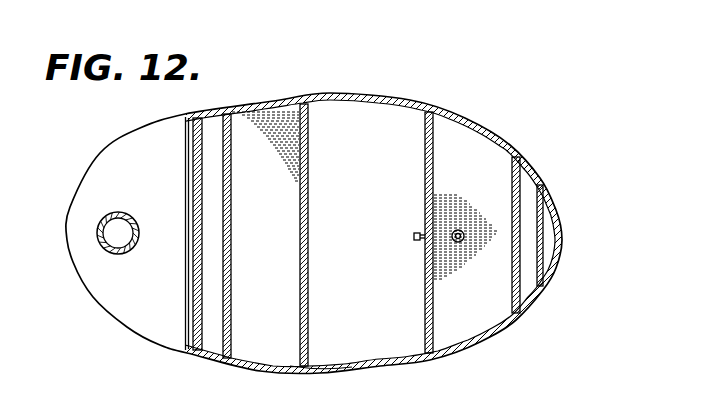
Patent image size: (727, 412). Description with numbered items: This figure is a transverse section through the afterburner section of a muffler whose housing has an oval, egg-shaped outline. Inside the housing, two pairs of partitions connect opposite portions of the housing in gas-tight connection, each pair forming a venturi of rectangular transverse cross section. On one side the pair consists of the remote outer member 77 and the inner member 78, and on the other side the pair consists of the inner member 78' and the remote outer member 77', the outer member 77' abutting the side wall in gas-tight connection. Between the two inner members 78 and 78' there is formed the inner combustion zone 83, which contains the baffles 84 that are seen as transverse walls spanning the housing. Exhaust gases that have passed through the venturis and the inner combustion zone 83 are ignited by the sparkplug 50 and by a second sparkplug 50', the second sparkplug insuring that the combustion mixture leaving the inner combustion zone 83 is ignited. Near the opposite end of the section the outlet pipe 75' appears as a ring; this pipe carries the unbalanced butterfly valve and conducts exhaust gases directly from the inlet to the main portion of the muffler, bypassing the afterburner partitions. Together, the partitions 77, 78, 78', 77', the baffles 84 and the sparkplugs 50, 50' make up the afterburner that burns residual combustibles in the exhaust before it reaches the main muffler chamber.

The remote outer member of partition pair 77 is at (226, 234).
The inner member of partition pair 78 is at (246, 236).
The baffles 84 is at (308, 215).
The inner member of partition pair 78' is at (495, 235).
The remote outer member of partition pair 77' is at (566, 235).
The outlet pipe 75' is at (125, 244).
The sparkplug 50 is at (470, 250).
The second sparkplug 50' is at (397, 252).
The inner combustion zone 83 is at (357, 355).